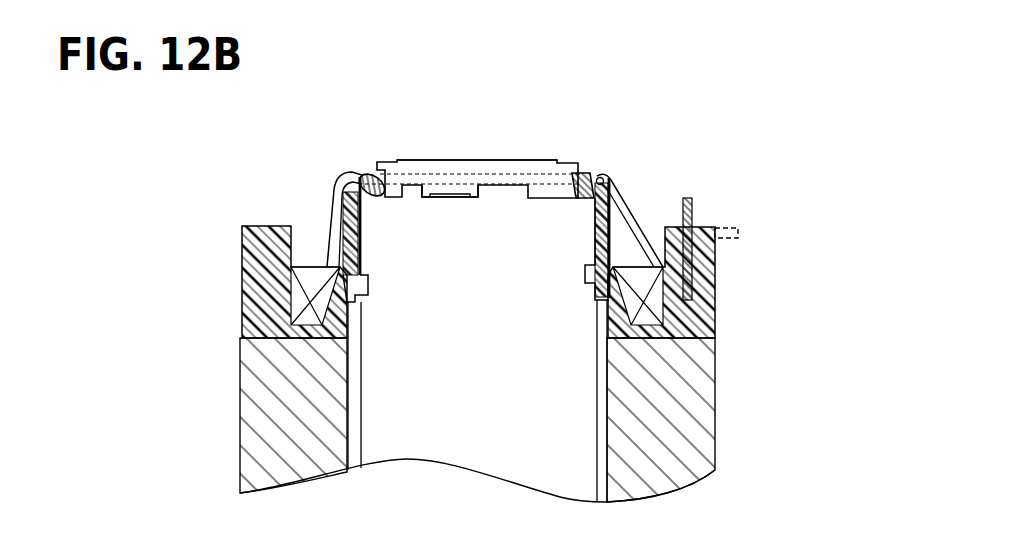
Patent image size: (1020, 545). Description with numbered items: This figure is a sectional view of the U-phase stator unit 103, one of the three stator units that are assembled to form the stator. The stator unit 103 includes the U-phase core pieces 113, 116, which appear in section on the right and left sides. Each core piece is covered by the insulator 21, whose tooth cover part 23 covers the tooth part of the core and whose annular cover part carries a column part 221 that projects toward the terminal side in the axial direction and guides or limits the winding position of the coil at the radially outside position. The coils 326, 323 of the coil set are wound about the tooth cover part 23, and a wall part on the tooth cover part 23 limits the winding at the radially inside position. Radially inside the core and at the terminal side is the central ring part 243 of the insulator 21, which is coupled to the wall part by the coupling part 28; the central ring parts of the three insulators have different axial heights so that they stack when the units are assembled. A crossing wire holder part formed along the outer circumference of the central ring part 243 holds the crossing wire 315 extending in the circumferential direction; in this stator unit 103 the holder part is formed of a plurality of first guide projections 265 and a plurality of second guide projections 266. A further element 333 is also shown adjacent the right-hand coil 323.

The stator unit 103 is at (774, 149).
The U-phase core piece 113 is at (703, 388).
The U-phase core piece 116 is at (263, 420).
The insulator 21 is at (236, 215).
The column part 221 is at (262, 252).
The tooth cover part 23 is at (331, 222).
The central ring part 243 is at (436, 129).
The first guide projection 265 is at (446, 198).
The second guide projection 266 is at (508, 158).
The coupling part 28 is at (578, 200).
The crossing wire 315 is at (500, 187).
The coil 323 is at (658, 305).
The coil 326 is at (300, 303).
The pin 333 is at (692, 210).